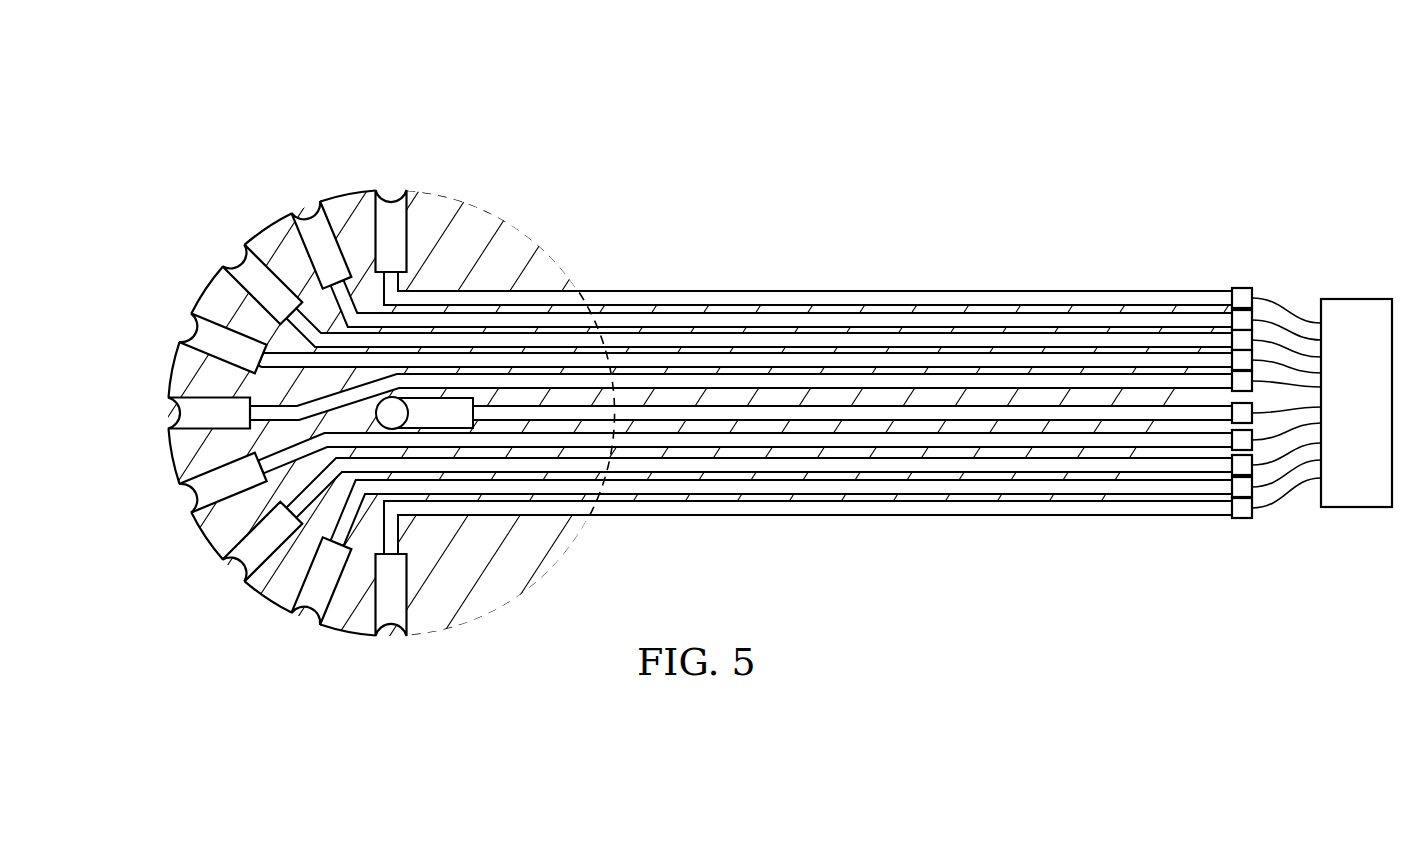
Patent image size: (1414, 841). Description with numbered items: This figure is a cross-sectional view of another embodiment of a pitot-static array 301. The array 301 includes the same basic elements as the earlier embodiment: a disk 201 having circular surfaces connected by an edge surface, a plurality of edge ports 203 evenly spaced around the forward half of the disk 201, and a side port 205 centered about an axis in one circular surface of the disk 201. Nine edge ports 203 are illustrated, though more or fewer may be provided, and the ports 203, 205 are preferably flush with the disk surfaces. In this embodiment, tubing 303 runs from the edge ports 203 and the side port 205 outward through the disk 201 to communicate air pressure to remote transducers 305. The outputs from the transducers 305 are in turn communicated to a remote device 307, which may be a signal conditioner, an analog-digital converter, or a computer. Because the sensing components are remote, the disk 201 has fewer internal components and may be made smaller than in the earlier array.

The disk 201 is at (484, 217).
The edge ports 203 is at (390, 175).
The side port 205 is at (392, 413).
The pitot-static array 301 is at (188, 120).
The tubing 303 is at (880, 289).
The remote transducers 305 is at (1243, 287).
The remote device 307 is at (1357, 299).